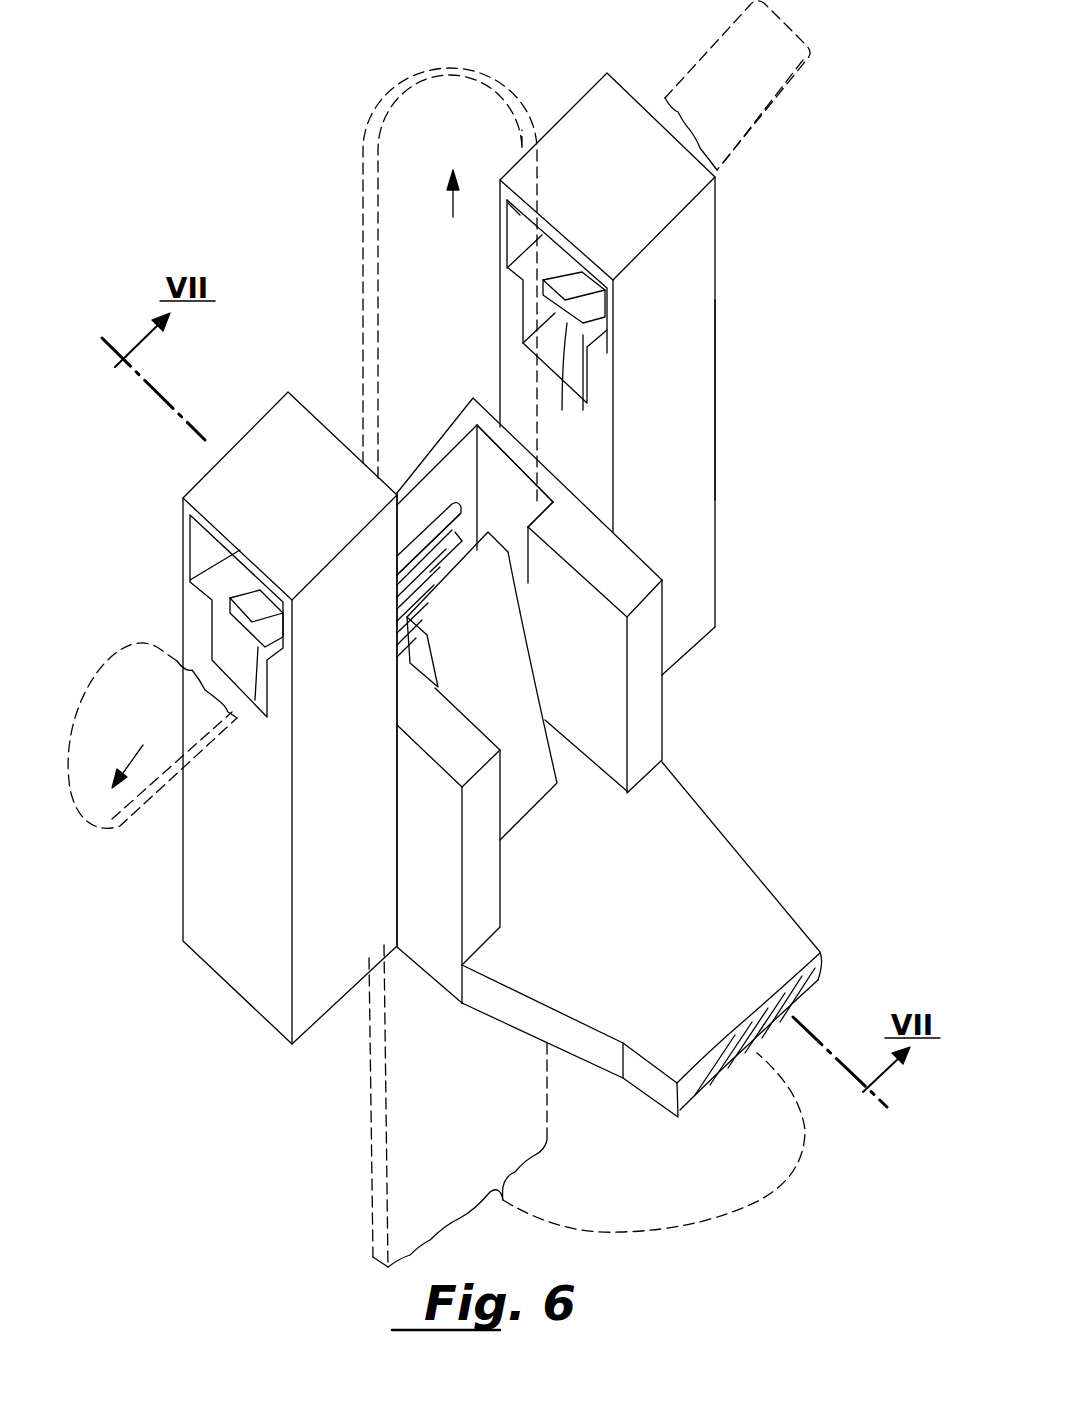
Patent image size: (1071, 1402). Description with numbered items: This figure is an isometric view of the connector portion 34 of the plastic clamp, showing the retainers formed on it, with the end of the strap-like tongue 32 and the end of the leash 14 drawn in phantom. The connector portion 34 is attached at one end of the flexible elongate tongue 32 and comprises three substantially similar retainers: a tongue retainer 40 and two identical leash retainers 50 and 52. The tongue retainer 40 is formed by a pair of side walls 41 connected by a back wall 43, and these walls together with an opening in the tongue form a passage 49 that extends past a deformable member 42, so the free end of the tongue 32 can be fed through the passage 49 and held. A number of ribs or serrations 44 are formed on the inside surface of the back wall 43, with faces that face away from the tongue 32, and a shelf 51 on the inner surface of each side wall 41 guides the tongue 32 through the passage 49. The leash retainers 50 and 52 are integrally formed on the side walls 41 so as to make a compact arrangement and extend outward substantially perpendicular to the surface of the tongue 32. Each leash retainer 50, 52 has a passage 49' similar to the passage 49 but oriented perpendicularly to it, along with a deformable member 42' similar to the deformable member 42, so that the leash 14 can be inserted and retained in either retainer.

The leash 14 is at (125, 833).
The tongue 32 is at (363, 253).
The connector portion 34 is at (757, 428).
The retainer 40 is at (662, 713).
The side walls 41 is at (455, 877).
The deformable member 42 is at (503, 686).
The deformable member 42' is at (574, 356).
The back wall 43 is at (467, 402).
The ribs 44 is at (433, 520).
The passage 49 is at (575, 463).
The passage 49' is at (474, 240).
The leash retainer 50 is at (715, 293).
The shelf 51 is at (533, 523).
The leash retainer 52 is at (200, 480).